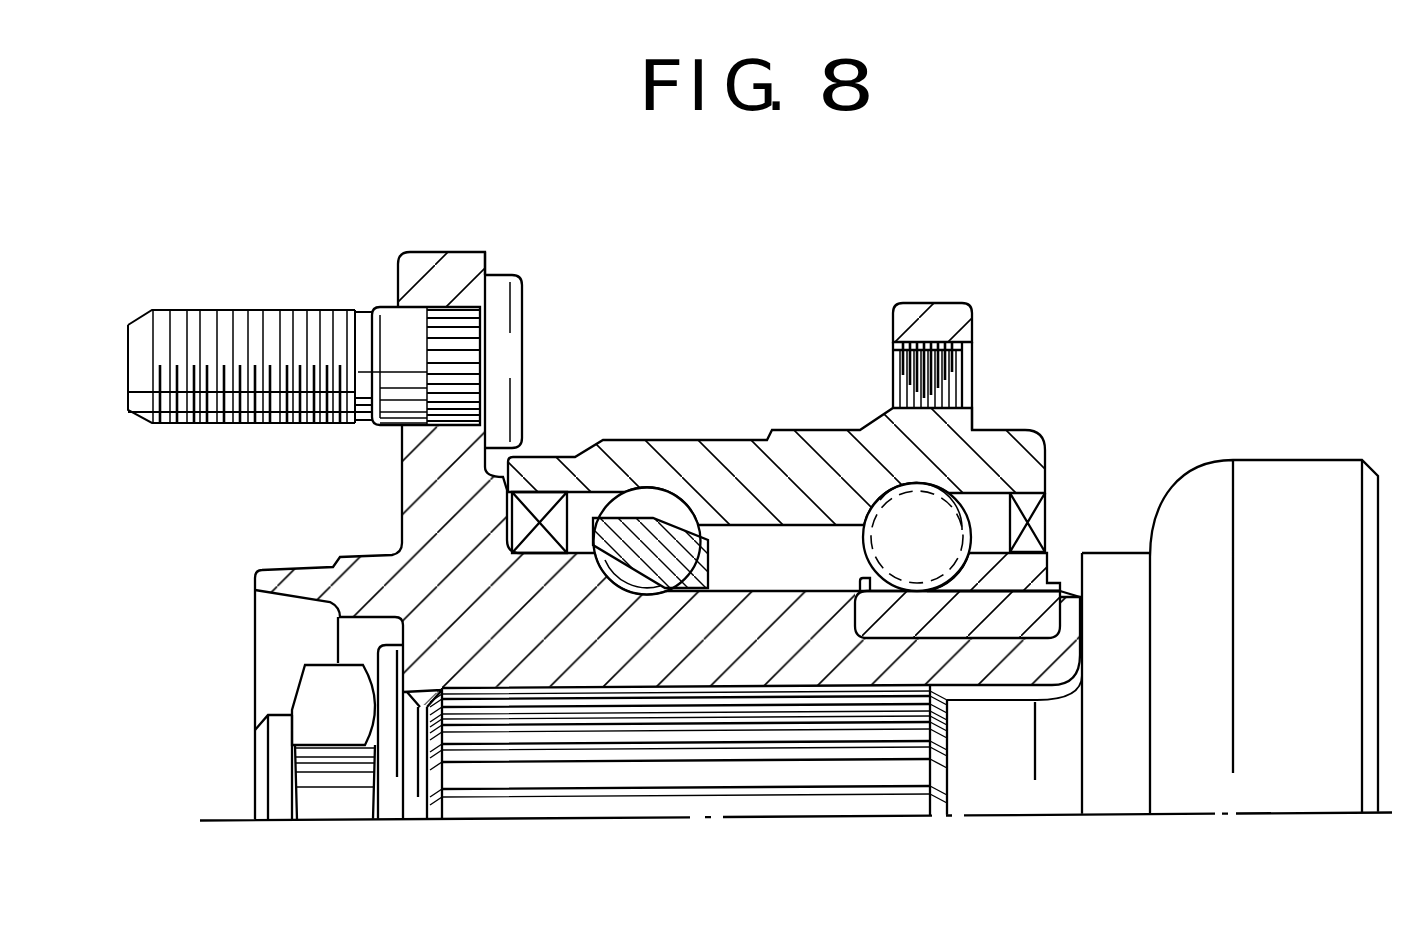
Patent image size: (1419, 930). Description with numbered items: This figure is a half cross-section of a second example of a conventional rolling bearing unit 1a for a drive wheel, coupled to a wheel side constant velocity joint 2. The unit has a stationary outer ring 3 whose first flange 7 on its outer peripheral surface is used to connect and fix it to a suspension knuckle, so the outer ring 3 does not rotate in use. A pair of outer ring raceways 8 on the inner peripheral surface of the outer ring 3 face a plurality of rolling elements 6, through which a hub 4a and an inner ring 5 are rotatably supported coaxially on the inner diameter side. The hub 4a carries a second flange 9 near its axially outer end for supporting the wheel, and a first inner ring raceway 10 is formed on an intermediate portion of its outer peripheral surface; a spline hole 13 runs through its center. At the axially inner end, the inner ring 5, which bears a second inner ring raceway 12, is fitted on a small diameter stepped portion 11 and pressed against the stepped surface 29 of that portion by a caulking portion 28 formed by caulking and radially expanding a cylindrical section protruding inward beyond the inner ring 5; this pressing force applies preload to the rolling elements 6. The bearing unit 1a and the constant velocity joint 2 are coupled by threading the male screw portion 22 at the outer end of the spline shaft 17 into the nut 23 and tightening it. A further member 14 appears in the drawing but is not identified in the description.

The rolling bearing unit 1a is at (990, 273).
The wheel side constant velocity joint 2 is at (1230, 552).
The outer ring 3 is at (776, 442).
The hub 4a is at (420, 523).
The inner ring 5 is at (988, 557).
The rolling elements 6 is at (875, 510).
The first flange 7 is at (917, 310).
The outer ring raceways 8 is at (888, 493).
The second flange 9 is at (455, 268).
The first inner ring raceway 10 is at (618, 592).
The small diameter stepped portion 11 is at (910, 640).
The second inner ring raceway 12 is at (940, 580).
The spline hole 13 is at (626, 585).
The outer joint member 14 is at (1310, 480).
The spline shaft 17 is at (698, 800).
The male screw portion 22 is at (262, 767).
The nut 23 is at (318, 687).
The caulking portion 28 is at (1065, 575).
The stepped surface 29 is at (857, 597).